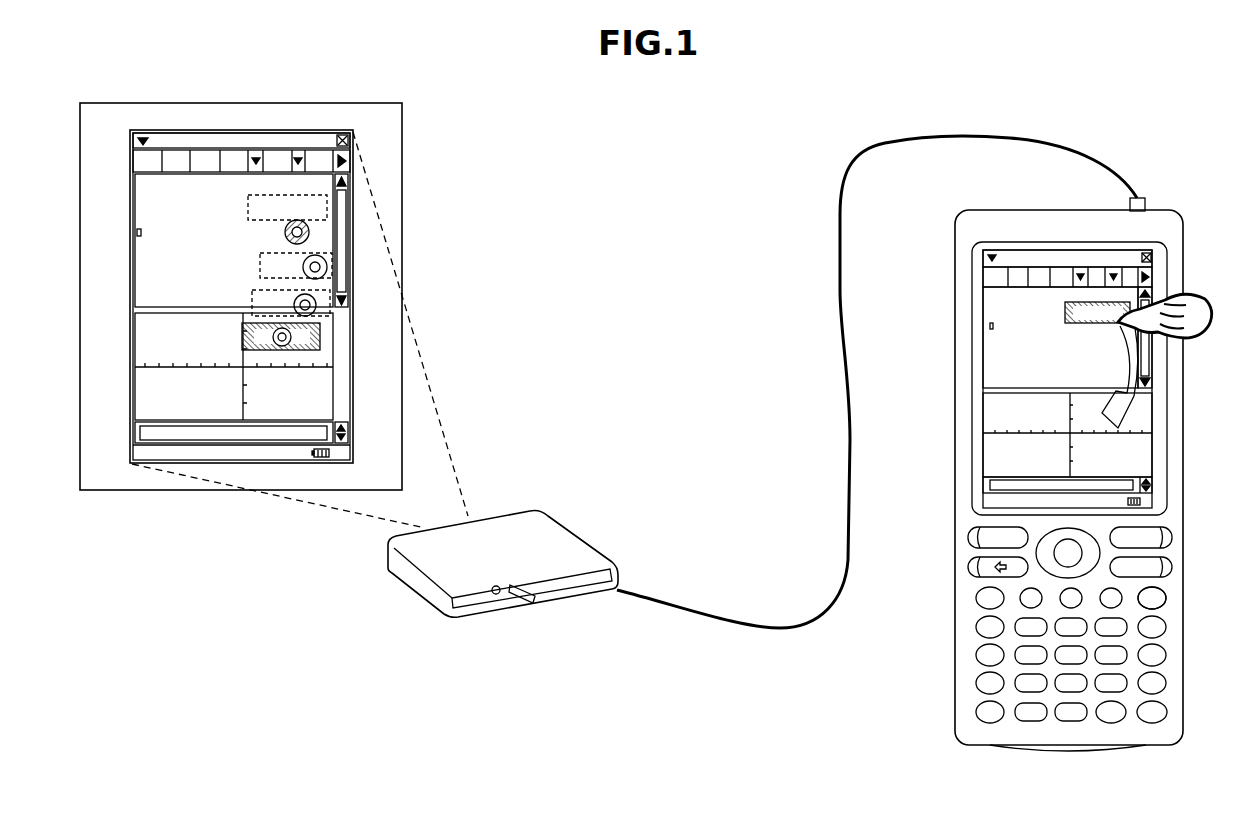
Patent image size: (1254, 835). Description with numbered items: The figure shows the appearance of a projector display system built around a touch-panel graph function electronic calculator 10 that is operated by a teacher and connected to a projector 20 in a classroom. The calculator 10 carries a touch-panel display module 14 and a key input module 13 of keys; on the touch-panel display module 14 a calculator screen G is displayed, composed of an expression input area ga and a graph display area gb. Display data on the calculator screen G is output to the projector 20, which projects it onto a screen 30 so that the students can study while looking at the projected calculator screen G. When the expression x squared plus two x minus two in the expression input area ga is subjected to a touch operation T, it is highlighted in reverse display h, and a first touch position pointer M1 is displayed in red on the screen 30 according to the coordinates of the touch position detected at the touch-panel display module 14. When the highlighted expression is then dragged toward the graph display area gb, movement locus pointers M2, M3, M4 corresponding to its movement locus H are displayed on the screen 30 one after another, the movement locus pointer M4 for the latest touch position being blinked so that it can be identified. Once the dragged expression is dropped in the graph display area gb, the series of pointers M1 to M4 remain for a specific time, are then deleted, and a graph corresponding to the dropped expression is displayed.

The screen 30 is at (402, 128).
The calculator screen G is at (183, 130).
The expression input area ga is at (1047, 302).
The graph display area gb is at (997, 461).
The first touch position pointer M1 is at (309, 231).
The movement locus pointer M2 is at (326, 261).
The movement locus pointer M3 is at (316, 299).
The movement locus pointer M4 is at (285, 347).
The reverse display h is at (1098, 302).
The projector 20 is at (574, 520).
The touch-panel graph function electronic calculator 10 is at (950, 273).
The touch-panel display module 14 is at (997, 365).
The key input module 13 is at (983, 637).
The touch operation T is at (1135, 323).
The movement locus H is at (1132, 405).